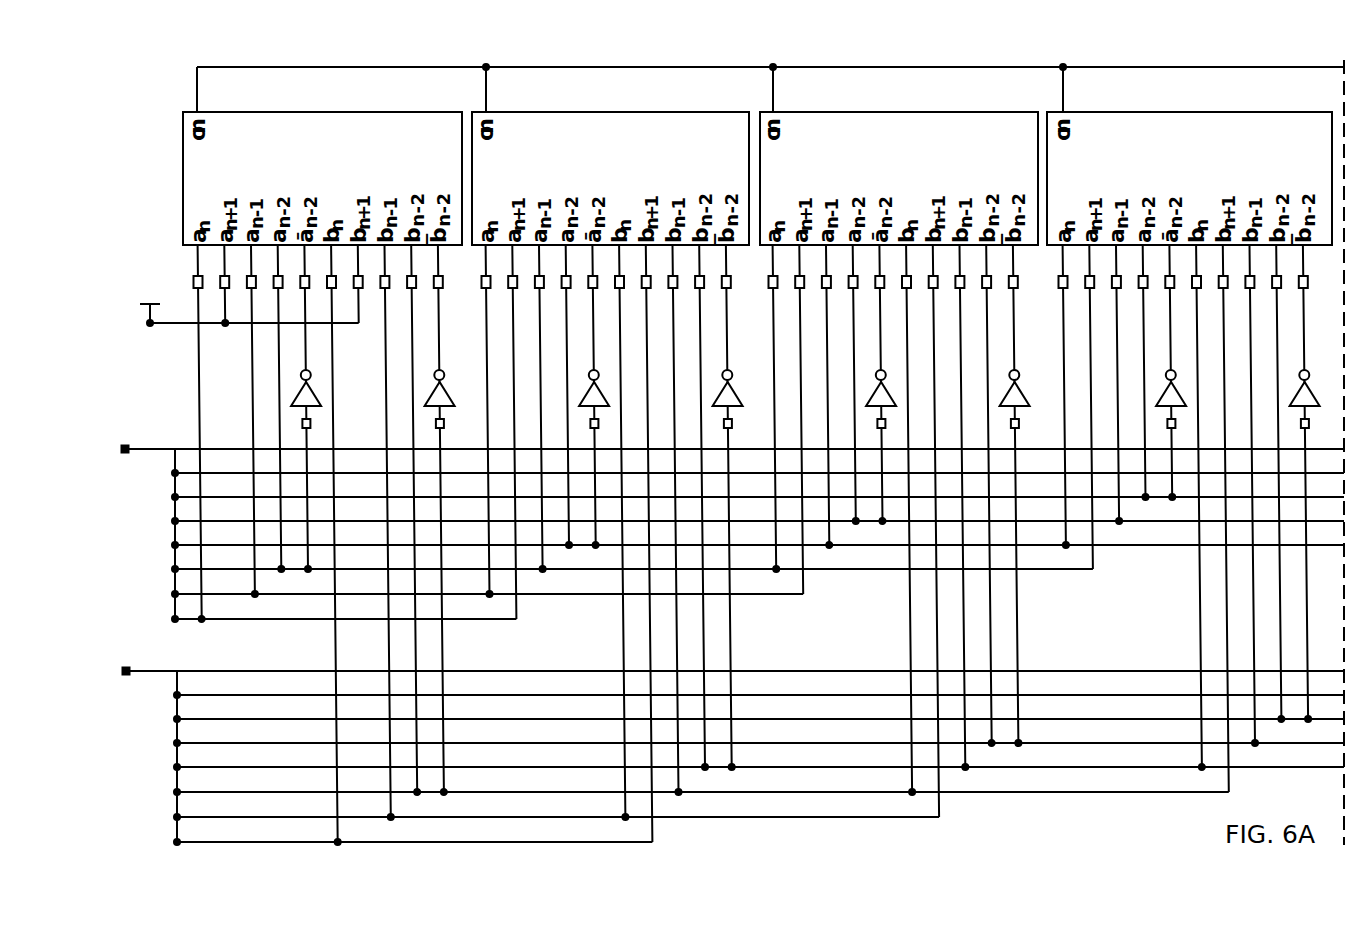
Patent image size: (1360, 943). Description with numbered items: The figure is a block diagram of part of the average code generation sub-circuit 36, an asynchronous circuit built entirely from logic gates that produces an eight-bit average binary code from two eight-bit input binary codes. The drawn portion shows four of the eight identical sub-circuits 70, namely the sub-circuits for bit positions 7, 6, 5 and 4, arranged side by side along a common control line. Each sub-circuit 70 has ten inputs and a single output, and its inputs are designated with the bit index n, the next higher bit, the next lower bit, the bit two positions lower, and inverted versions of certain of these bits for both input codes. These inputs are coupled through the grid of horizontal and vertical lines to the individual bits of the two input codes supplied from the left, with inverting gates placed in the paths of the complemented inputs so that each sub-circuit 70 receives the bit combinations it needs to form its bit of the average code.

The average code generation sub-circuit 36 is at (143, 93).
The sub-circuit 70 is at (757, 178).
The cell index 7 is at (322, 178).
The cell index 6 is at (610, 178).
The cell index 5 is at (899, 178).
The cell index 4 is at (1189, 178).